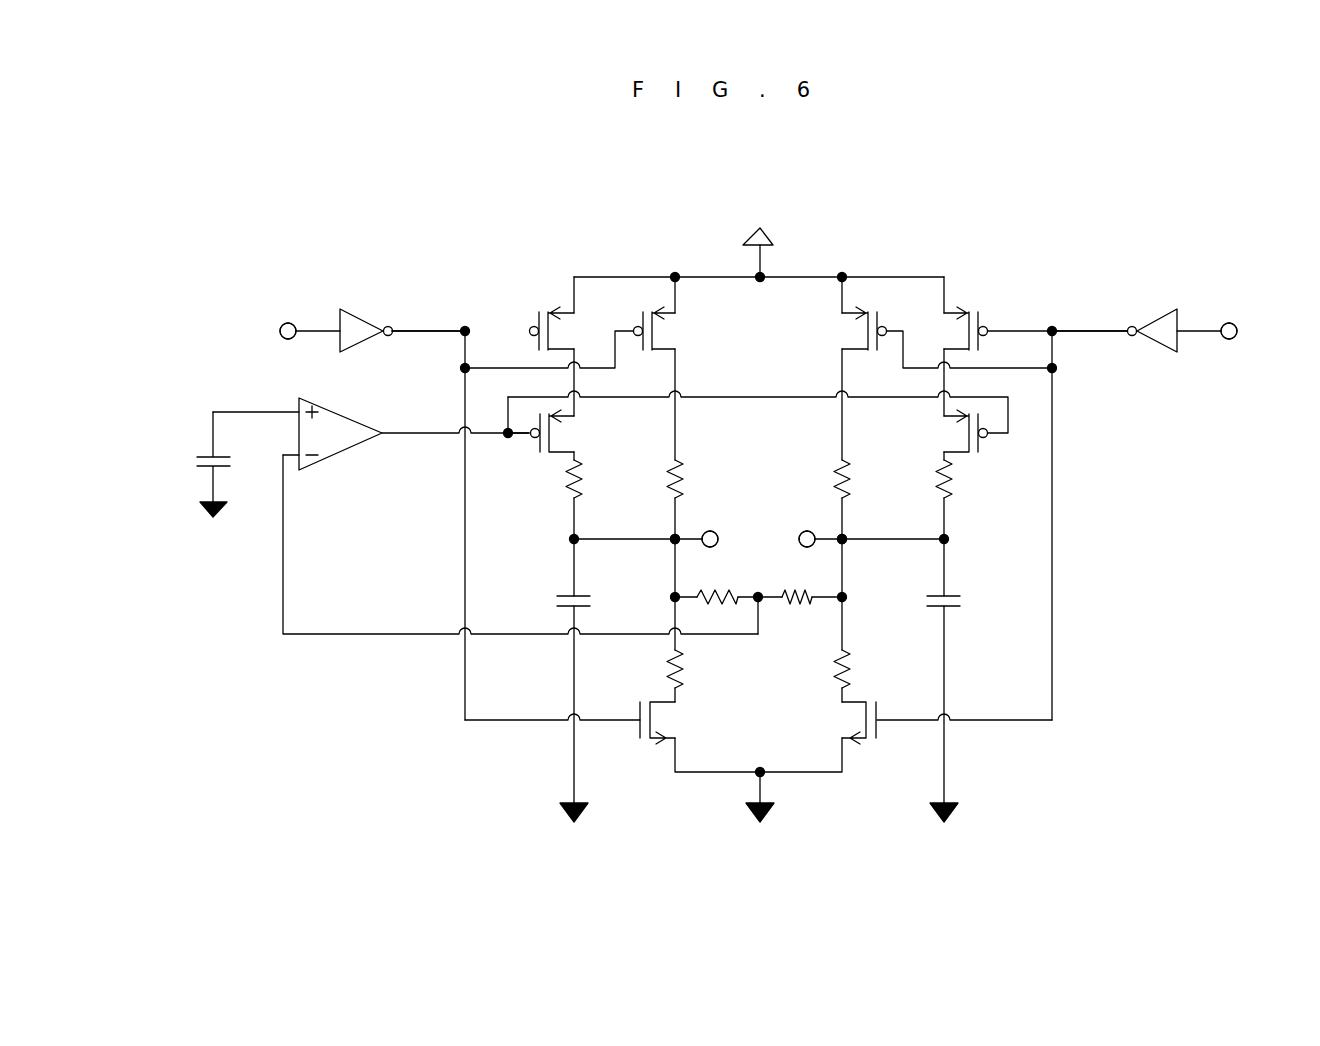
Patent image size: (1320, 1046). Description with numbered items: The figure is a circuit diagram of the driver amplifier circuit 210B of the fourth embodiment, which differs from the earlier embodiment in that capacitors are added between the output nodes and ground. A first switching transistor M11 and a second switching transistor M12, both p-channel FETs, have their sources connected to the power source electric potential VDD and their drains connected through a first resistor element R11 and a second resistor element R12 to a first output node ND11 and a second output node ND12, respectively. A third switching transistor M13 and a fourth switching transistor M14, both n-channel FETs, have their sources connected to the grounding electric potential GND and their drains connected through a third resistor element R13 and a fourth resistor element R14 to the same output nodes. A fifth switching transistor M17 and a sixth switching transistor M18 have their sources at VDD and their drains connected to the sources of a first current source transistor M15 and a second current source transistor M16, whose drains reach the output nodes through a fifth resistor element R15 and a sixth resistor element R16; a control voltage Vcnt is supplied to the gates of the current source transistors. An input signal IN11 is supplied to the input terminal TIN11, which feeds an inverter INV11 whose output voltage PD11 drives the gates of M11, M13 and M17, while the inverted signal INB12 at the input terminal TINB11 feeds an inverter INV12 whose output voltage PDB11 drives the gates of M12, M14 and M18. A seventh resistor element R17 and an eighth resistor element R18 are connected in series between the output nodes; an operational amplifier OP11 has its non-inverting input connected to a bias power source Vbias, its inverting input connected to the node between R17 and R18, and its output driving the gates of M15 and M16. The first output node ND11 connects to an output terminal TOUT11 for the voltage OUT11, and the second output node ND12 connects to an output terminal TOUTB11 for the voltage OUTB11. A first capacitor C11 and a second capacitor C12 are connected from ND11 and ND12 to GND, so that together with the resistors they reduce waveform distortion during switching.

The driver amplifier circuit 210B is at (783, 162).
The first switching transistor M11 is at (663, 333).
The second switching transistor M12 is at (855, 331).
The third switching transistor M13 is at (667, 722).
The fourth switching transistor M14 is at (855, 722).
The first current source transistor M15 is at (562, 437).
The second current source transistor M16 is at (955, 435).
The fifth switching transistor M17 is at (563, 330).
The sixth switching transistor M18 is at (955, 330).
The first resistor element R11 is at (699, 479).
The second resistor element R12 is at (816, 479).
The third resistor element R13 is at (700, 669).
The fourth resistor element R14 is at (816, 669).
The fifth resistor element R15 is at (598, 479).
The sixth resistor element R16 is at (918, 479).
The seventh resistor element R17 is at (718, 613).
The eighth resistor element R18 is at (803, 613).
The first capacitor C11 is at (550, 605).
The second capacitor C12 is at (967, 605).
The inverter INV11 is at (362, 309).
The inverter INV12 is at (1151, 309).
The operational amplifier OP11 is at (345, 456).
The input signal IN11 is at (286, 317).
The input terminal TIN11 is at (288, 340).
The inverted input signal INB12 is at (1224, 318).
The input terminal TINB11 is at (1229, 340).
The output voltage PD11 is at (428, 317).
The output voltage PDB11 is at (1089, 317).
The control voltage Vcnt is at (455, 446).
The bias power source Vbias is at (185, 464).
The power source electric potential VDD is at (756, 240).
The grounding electric potential GND is at (758, 828).
The voltage OUT OUT11 is at (718, 554).
The output terminal TOUT11 is at (704, 532).
The first output node ND11 is at (672, 544).
The second output node ND12 is at (844, 537).
The voltage OUTB OUTB11 is at (786, 527).
The output terminal TOUTB11 is at (815, 546).